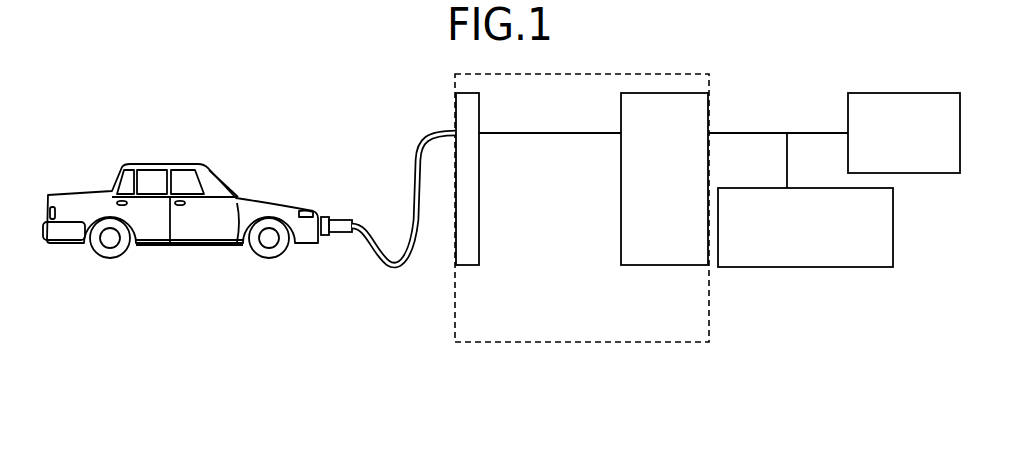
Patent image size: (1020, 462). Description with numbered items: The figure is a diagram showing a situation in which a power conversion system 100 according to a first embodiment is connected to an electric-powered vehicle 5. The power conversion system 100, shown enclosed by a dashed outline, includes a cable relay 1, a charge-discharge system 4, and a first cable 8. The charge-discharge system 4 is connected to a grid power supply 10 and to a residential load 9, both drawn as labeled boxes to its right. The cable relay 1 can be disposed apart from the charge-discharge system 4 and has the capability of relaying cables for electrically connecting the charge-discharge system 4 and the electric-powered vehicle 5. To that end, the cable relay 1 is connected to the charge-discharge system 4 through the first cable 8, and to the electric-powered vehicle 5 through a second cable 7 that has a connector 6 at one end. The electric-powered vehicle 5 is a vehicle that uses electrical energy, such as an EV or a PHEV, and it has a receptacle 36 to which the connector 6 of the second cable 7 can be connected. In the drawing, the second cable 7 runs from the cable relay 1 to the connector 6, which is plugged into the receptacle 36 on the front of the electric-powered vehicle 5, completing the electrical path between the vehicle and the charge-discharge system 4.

The cable relay 1 is at (469, 268).
The charge-discharge system 4 is at (667, 267).
The electric-powered vehicle 5 is at (185, 250).
The connector 6 is at (340, 234).
The second cable 7 is at (397, 269).
The first cable 8 is at (551, 135).
The residential load 9 is at (790, 269).
The grid power supply 10 is at (932, 175).
The receptacle 36 is at (322, 217).
The power conversion system 100 is at (582, 343).